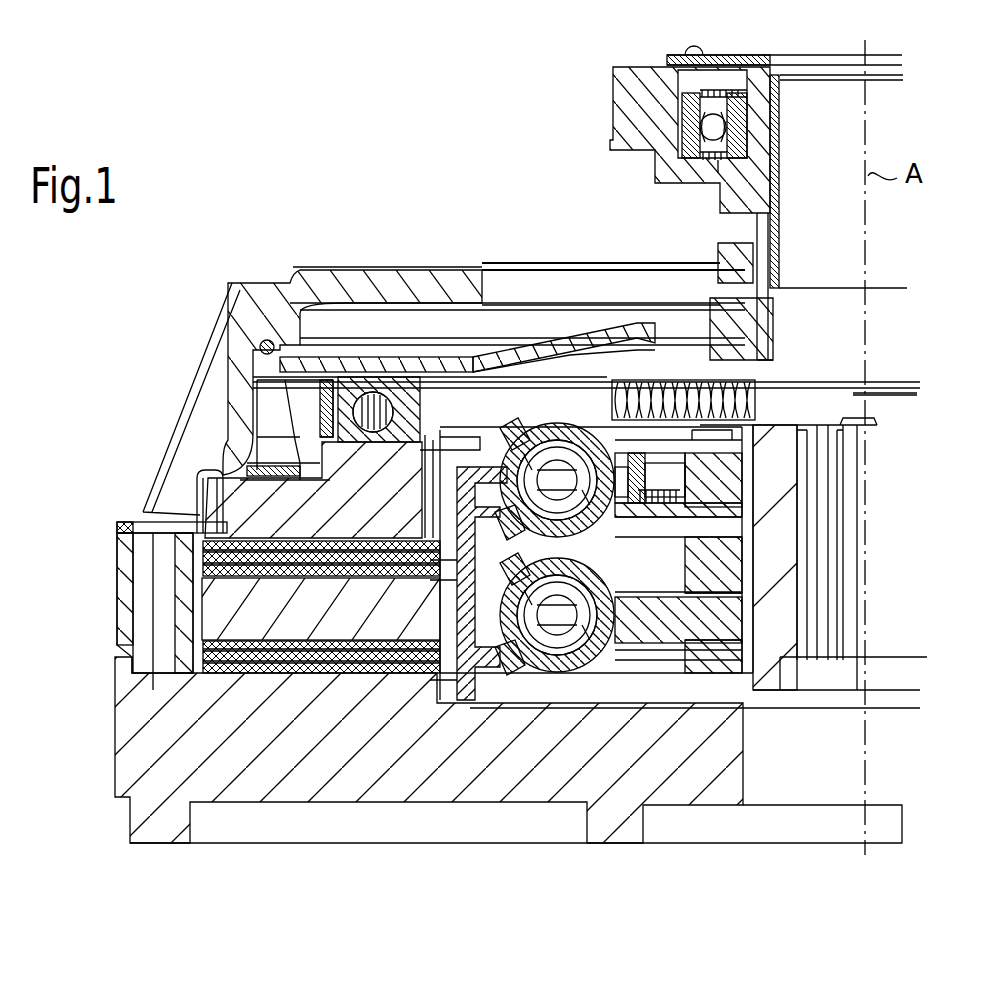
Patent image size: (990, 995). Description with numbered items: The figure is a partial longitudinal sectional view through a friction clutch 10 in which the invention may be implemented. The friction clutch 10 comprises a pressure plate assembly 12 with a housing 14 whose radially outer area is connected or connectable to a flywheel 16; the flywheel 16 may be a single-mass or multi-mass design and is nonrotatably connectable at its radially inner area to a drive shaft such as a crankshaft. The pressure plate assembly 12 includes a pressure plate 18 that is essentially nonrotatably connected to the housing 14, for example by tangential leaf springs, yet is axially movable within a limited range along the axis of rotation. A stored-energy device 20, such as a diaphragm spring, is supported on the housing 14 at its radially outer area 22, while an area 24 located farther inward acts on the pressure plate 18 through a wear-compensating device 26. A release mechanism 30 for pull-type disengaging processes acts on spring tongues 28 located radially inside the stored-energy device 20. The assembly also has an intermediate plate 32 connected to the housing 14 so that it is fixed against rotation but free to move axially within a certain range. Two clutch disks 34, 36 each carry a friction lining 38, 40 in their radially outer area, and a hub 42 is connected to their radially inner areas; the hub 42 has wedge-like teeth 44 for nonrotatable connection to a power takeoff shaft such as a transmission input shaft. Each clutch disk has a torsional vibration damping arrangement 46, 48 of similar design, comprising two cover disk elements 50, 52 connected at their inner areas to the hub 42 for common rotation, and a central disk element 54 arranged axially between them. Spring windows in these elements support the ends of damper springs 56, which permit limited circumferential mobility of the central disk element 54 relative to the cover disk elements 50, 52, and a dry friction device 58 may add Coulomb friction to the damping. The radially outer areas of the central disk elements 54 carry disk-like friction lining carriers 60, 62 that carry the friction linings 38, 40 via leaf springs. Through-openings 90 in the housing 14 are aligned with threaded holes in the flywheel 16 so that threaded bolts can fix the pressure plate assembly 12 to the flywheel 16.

The friction clutch 10 is at (262, 226).
The pressure plate assembly 12 is at (176, 342).
The housing 14 is at (240, 285).
The flywheel 16 is at (113, 760).
The pressure plate 18 is at (213, 490).
The stored-energy device 20 is at (383, 367).
The radially outer area 22 is at (281, 352).
The area 24 is at (335, 357).
The wear-compensating device 26 is at (300, 392).
The spring tongues 28 is at (583, 338).
The release mechanism 30 is at (590, 126).
The intermediate plate 32 is at (220, 600).
The clutch disk 34 is at (418, 665).
The clutch disk 36 is at (524, 700).
The friction lining 38 is at (128, 518).
The friction lining 40 is at (120, 698).
The hub 42 is at (890, 405).
The wedge-like teeth 44 is at (847, 565).
The torsional vibration damping arrangement 46 is at (770, 357).
The torsional vibration damping arrangement 48 is at (663, 680).
The cover disk element 50 is at (695, 540).
The cover disk element 52 is at (757, 540).
The central disk element 54 is at (557, 677).
The damper spring 56 is at (657, 438).
The dry friction device 58 is at (705, 485).
The friction lining carrier 60 is at (203, 551).
The friction lining carrier 62 is at (205, 657).
The through-openings 90 is at (140, 606).